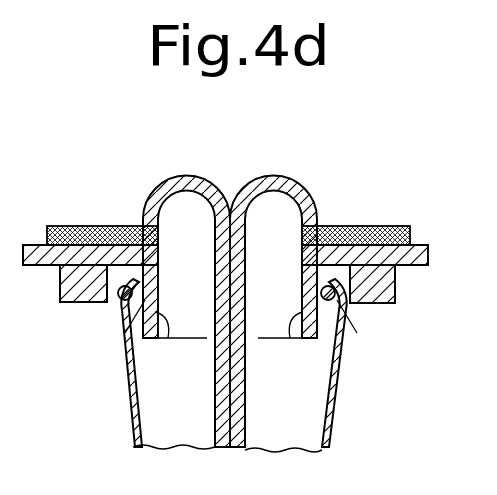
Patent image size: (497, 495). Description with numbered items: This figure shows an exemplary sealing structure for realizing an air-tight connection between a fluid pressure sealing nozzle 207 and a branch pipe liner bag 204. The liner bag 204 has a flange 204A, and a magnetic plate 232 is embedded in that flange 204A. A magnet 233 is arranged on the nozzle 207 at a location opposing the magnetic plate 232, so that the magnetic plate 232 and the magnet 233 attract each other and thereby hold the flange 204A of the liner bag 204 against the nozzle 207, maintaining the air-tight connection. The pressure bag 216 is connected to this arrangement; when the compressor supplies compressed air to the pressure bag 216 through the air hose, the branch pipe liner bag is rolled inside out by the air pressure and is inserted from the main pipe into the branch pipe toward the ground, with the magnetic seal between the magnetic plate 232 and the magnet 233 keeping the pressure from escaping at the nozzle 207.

The branch pipe liner bag 204 is at (243, 421).
The flange 204A is at (88, 225).
The fluid pressure sealing nozzle 207 is at (167, 338).
The pressure bag 216 is at (328, 422).
The magnetic plate 232 is at (383, 227).
The magnet 233 is at (360, 306).